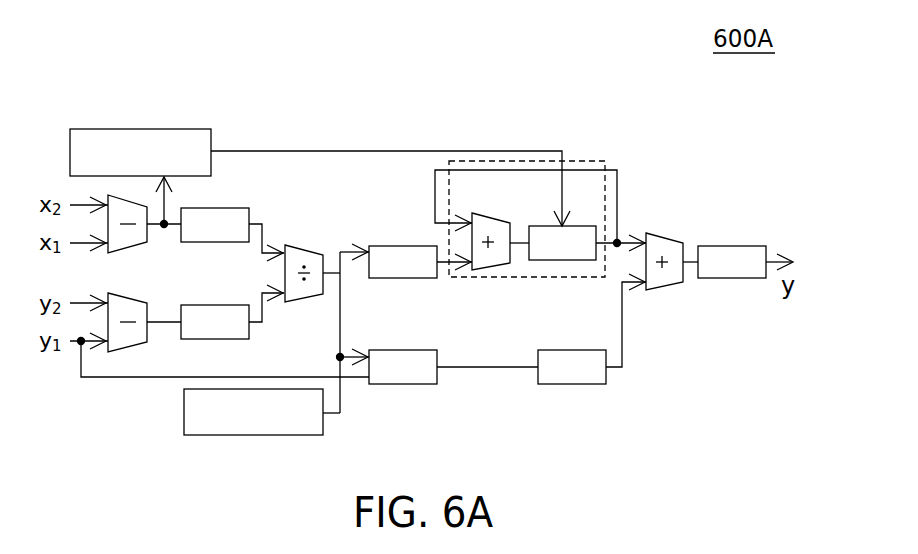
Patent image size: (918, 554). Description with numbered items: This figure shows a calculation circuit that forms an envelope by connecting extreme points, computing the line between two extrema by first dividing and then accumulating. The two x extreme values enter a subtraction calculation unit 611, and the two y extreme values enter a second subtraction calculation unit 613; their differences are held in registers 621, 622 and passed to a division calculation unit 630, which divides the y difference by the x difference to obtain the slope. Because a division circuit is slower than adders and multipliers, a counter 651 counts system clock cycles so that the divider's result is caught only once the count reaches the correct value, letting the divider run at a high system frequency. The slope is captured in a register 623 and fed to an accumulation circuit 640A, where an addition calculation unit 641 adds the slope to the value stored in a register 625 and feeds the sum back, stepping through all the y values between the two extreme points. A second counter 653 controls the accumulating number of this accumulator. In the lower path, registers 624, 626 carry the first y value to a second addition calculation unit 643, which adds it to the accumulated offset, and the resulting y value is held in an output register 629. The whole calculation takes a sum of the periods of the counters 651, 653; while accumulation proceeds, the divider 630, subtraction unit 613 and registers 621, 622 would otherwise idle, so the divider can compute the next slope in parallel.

The subtraction calculation unit 611 is at (128, 253).
The subtraction calculation unit 613 is at (128, 352).
The register 621 is at (215, 207).
The register 622 is at (217, 340).
The register 623 is at (380, 279).
The register 624 is at (403, 385).
The register 625 is at (563, 262).
The register 626 is at (573, 385).
The register 629 is at (735, 245).
The division calculation unit 630 is at (318, 251).
The accumulation circuit 640A is at (596, 160).
The addition calculation unit 641 is at (501, 265).
The addition calculation unit 643 is at (667, 238).
The counter 651 is at (165, 128).
The counter 653 is at (279, 437).